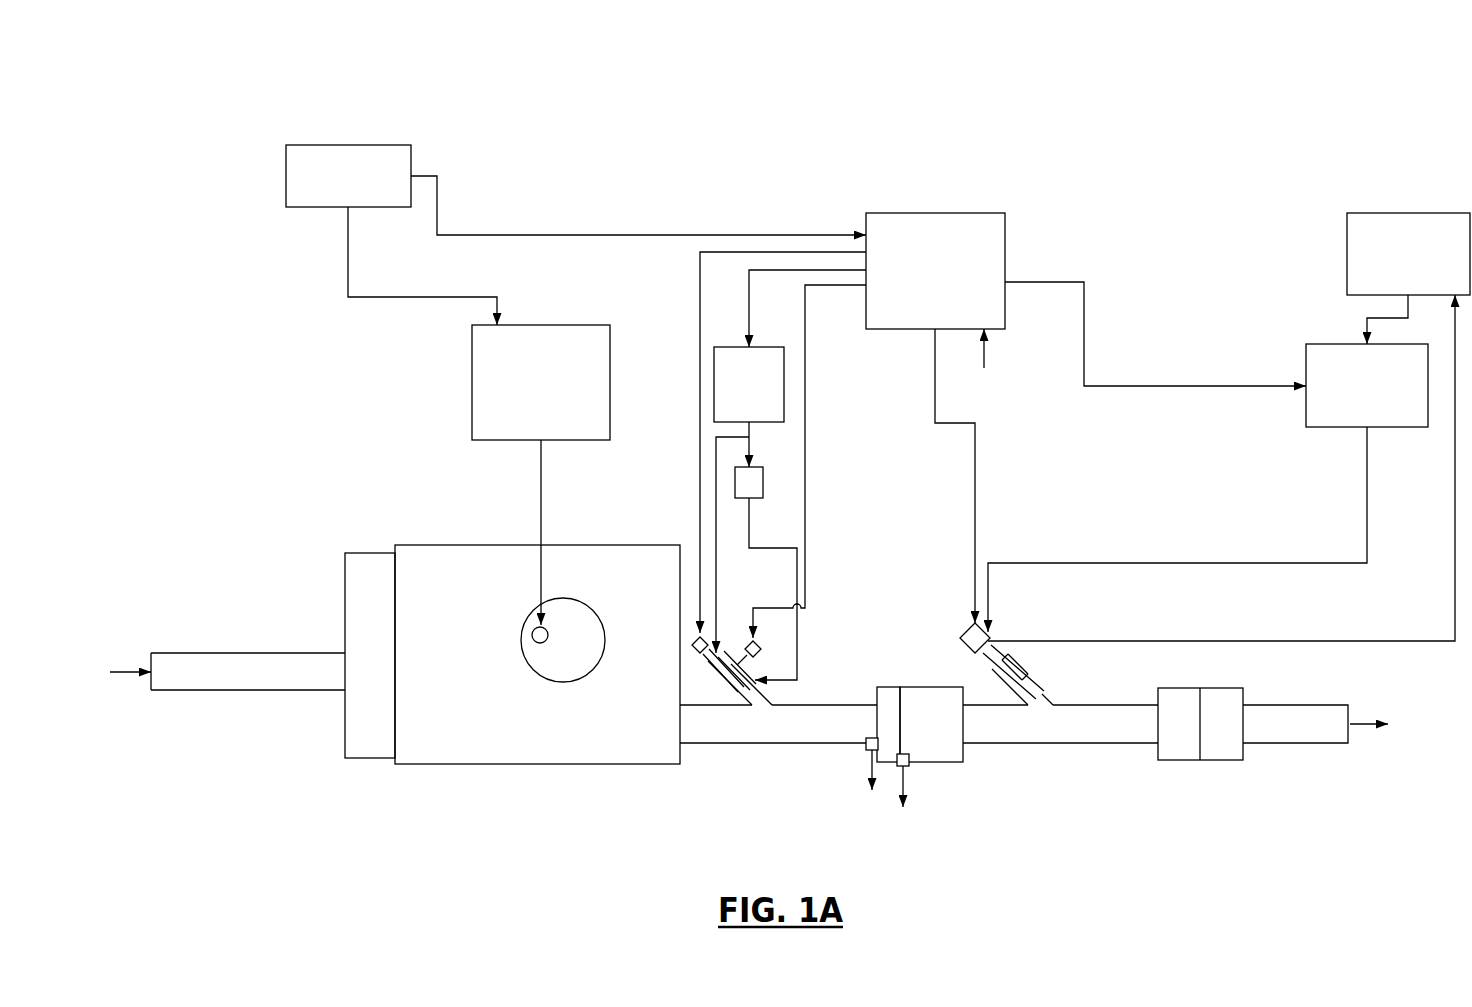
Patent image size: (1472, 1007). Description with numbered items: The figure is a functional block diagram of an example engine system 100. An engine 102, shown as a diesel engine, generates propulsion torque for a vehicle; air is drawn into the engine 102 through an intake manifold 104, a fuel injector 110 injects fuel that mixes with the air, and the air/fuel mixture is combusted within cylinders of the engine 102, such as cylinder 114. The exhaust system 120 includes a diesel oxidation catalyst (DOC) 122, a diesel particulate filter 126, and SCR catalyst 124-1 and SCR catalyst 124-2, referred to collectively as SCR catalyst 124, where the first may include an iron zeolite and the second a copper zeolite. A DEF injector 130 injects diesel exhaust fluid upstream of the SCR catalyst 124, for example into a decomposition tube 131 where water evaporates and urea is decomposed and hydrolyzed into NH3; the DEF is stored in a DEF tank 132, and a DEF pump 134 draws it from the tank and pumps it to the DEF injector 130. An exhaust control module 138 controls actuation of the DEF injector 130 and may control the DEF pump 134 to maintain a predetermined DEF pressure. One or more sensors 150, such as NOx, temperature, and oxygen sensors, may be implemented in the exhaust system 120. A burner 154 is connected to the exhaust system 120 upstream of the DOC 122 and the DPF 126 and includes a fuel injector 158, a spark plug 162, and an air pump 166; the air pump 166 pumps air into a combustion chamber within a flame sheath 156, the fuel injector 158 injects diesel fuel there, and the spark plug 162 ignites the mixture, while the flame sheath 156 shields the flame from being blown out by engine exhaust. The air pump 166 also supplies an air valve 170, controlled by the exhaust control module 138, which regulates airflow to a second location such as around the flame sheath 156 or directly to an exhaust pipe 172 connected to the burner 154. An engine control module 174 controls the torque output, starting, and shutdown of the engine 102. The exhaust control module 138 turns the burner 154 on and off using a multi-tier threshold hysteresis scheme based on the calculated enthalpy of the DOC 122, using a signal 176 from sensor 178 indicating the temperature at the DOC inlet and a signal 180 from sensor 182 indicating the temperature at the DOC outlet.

The engine system 100 is at (265, 53).
The engine 102 is at (460, 545).
The intake manifold 104 is at (360, 553).
The fuel injector 110 is at (532, 633).
The cylinder 114 is at (563, 683).
The exhaust system 120 is at (1175, 866).
The diesel oxidation catalyst (DOC) 122 is at (885, 687).
The SCR catalyst 124 is at (1216, 745).
The SCR catalyst 124-1 is at (1178, 760).
The SCR catalyst 124-2 is at (1226, 760).
The diesel particulate filter 126 is at (912, 687).
The DEF injector 130 is at (963, 628).
The decomposition tube 131 is at (1043, 693).
The DEF tank 132 is at (1398, 213).
The DEF pump 134 is at (1306, 362).
The exhaust control module 138 is at (953, 213).
The sensors 150 is at (350, 145).
The burner 154 is at (773, 636).
The flame sheath 156 is at (731, 690).
The fuel injector 158 is at (705, 682).
The spark plug 162 is at (797, 680).
The air pump 166 is at (784, 385).
The air valve 170 is at (763, 484).
The exhaust pipe 172 is at (747, 745).
The engine control module (ECM) 174 is at (545, 325).
The signal 176 is at (984, 355).
The sensor 178 is at (866, 745).
The signal 180 is at (895, 792).
The sensor 182 is at (909, 760).